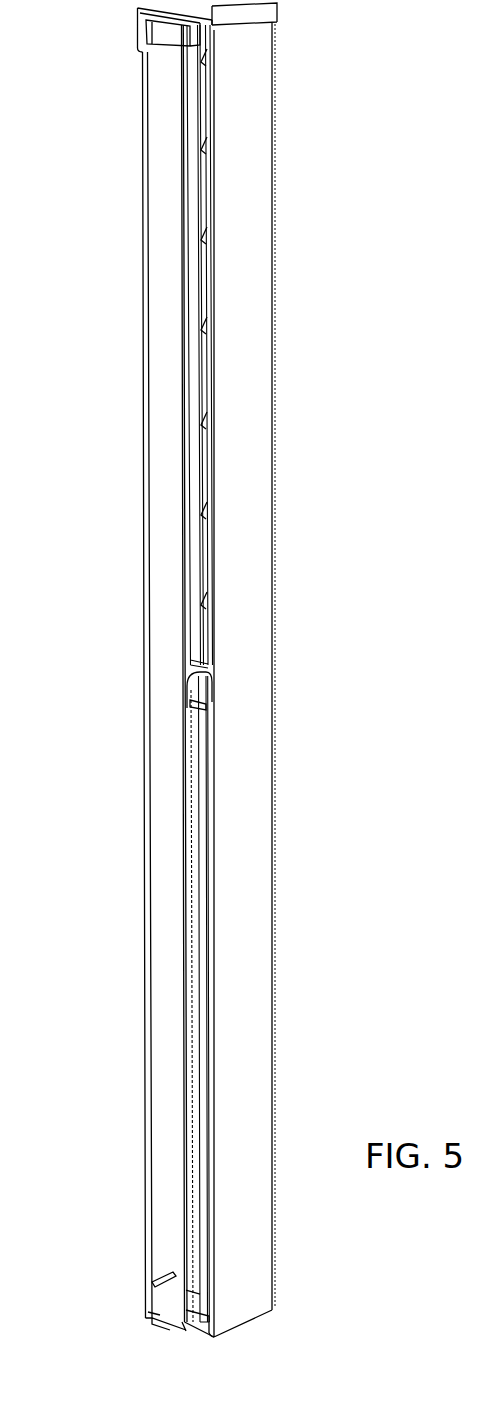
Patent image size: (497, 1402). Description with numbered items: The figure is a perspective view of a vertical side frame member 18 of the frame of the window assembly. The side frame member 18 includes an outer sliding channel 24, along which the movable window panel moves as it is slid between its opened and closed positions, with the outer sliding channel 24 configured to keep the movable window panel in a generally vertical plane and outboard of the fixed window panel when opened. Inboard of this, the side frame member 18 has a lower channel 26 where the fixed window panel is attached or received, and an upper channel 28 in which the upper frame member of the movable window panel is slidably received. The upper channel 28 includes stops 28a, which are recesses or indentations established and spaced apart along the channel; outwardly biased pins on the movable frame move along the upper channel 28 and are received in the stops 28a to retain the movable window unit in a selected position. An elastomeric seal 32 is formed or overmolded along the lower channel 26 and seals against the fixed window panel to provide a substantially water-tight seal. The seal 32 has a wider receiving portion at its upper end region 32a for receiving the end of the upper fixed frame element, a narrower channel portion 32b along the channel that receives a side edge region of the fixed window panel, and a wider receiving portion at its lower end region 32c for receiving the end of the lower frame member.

The side frame member 18 is at (357, 194).
The outer sliding channel 24 is at (163, 167).
The lower channel 26 is at (174, 927).
The upper channel 28 is at (190, 316).
The stops 28a is at (201, 424).
The elastomeric seal 32 is at (207, 890).
The upper end region 32a is at (183, 690).
The narrower channel portion 32b is at (192, 1015).
The lower end region 32c is at (195, 1296).